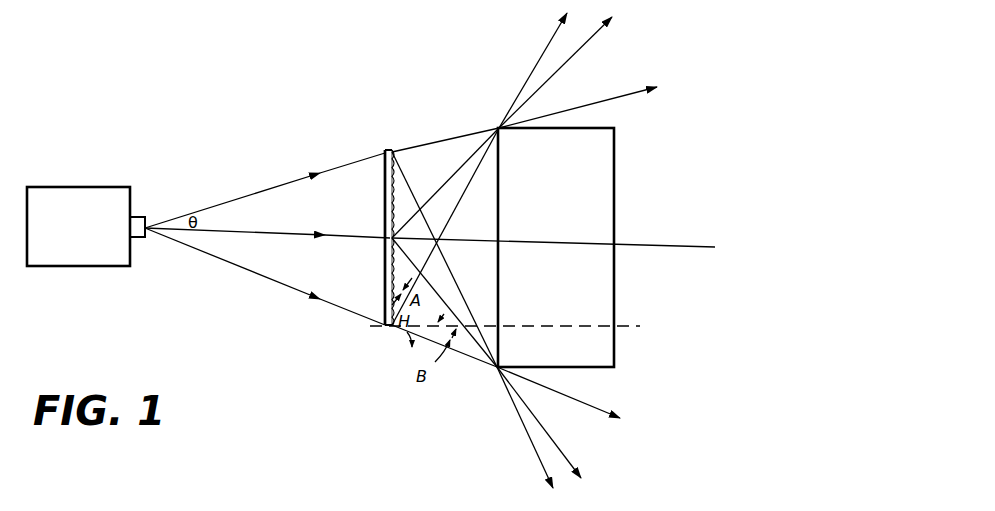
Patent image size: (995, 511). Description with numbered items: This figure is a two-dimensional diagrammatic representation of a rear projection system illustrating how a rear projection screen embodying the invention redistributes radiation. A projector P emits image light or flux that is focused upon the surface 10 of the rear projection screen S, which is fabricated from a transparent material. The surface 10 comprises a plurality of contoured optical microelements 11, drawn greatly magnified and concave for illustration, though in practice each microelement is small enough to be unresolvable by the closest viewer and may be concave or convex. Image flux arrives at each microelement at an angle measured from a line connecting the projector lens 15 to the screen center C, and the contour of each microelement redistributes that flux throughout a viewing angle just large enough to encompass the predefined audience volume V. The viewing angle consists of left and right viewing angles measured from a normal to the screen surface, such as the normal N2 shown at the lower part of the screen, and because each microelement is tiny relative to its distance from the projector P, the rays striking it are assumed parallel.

The projector lens 15 is at (141, 216).
The surface 10 is at (396, 182).
The contoured optical microelements 11 is at (394, 222).
The projector P is at (78, 236).
The rear projection screen S is at (394, 147).
The audience volume V is at (556, 240).
The screen center C is at (372, 226).
The normal axis N2 is at (505, 316).